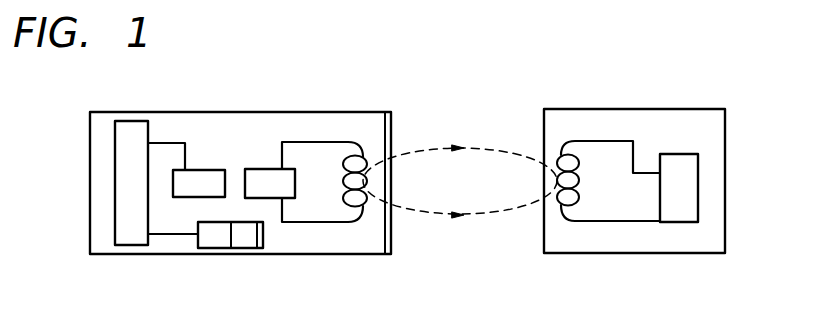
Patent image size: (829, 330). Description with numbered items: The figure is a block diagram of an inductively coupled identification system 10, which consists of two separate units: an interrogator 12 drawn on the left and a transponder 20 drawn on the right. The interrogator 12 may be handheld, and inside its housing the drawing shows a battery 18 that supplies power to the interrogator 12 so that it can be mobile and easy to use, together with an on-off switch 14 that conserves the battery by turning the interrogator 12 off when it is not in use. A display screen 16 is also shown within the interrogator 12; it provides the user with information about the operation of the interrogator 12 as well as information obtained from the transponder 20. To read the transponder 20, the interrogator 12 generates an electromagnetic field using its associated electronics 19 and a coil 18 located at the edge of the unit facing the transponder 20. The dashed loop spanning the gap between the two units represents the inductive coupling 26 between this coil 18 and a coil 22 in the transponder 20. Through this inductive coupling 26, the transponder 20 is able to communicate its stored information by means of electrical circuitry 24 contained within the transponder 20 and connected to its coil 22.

The inductively coupled identification system 10 is at (462, 98).
The interrogator 12 is at (229, 111).
The on-off switch 14 is at (230, 254).
The display screen 16 is at (215, 170).
The battery / coil 18 is at (114, 163).
The associated electronics 19 is at (272, 169).
The transponder 20 is at (635, 109).
The coil 22 is at (556, 148).
The electrical circuitry 24 is at (699, 187).
The inductive coupling 26 is at (432, 151).